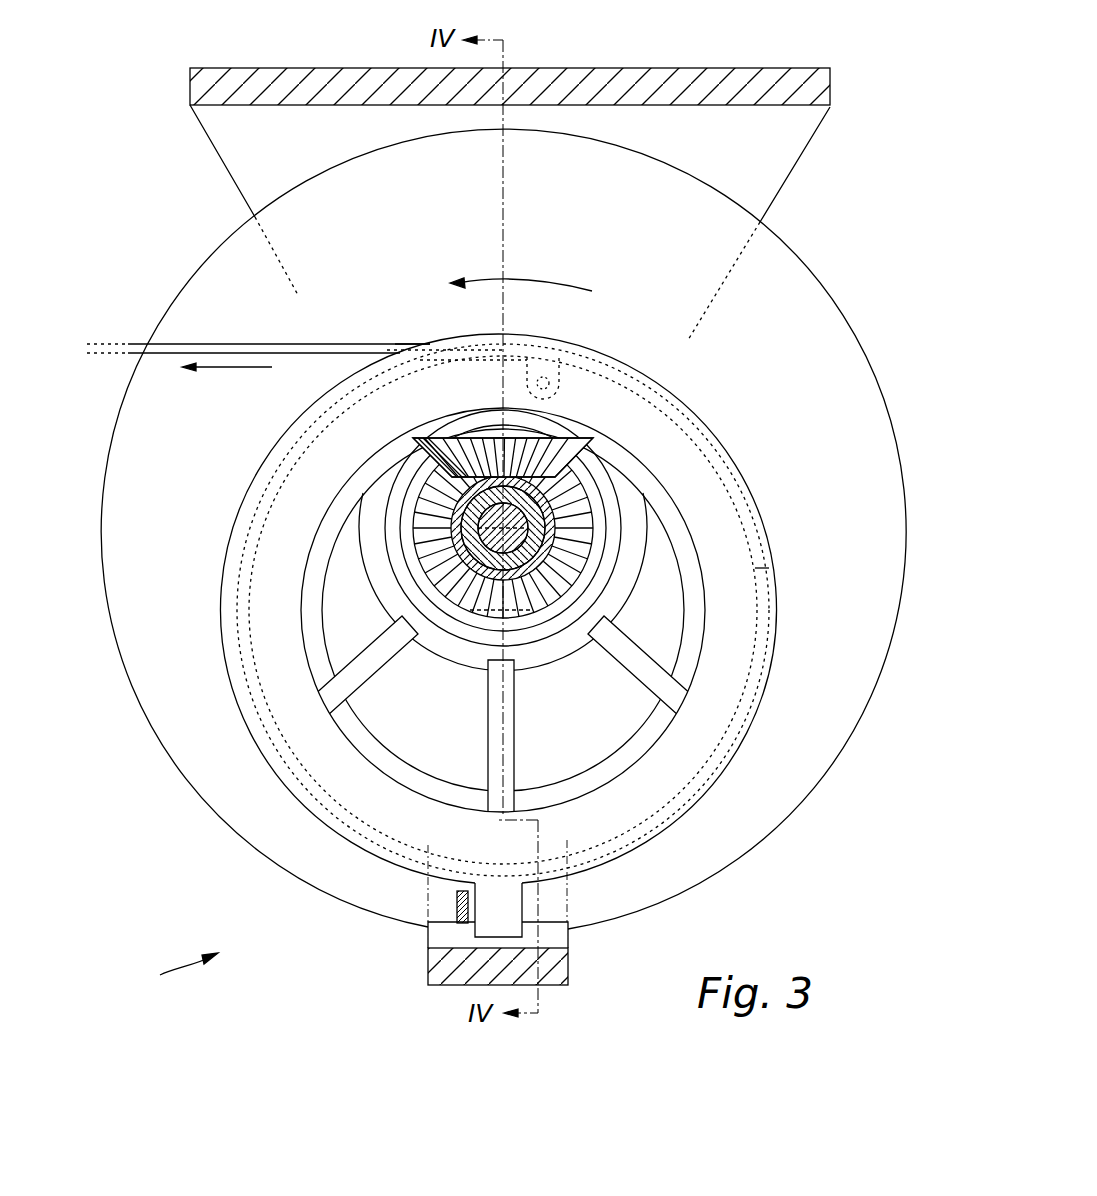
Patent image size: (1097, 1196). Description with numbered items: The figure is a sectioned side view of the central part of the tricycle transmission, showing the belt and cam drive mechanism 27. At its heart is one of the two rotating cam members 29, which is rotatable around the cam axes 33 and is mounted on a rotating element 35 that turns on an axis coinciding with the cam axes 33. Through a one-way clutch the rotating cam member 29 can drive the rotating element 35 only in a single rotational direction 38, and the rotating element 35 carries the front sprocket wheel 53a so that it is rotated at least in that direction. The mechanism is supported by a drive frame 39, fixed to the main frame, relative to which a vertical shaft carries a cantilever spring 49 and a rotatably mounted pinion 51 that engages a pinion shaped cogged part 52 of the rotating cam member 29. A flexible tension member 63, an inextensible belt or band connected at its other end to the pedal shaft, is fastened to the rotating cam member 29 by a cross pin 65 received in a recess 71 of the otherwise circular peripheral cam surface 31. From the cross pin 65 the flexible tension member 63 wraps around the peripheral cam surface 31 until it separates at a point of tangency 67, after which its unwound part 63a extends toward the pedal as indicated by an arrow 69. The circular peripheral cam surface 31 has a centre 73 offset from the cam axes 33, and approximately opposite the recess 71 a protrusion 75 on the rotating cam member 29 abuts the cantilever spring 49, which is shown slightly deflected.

The belt and cam drive mechanism 27 is at (178, 982).
The rotating cam member 29 is at (732, 430).
The peripheral cam surface 31 is at (767, 567).
The cam axes 33 is at (565, 494).
The rotating element 35 is at (503, 619).
The rotational direction 38 is at (540, 283).
The drive frame 39 is at (640, 68).
The cantilever spring 49 is at (457, 908).
The pinion 51 is at (462, 440).
The pinion shaped cogged part 52 is at (395, 495).
The front sprocket wheel 53a is at (808, 263).
The flexible tension member 63 is at (757, 500).
The unwound part 63a is at (272, 345).
The cross pin 65 is at (543, 377).
The point of tangency 67 is at (440, 345).
The arrow 69 is at (216, 368).
The recess 71 is at (565, 372).
The centre 73 is at (487, 612).
The protrusion 75 is at (512, 906).